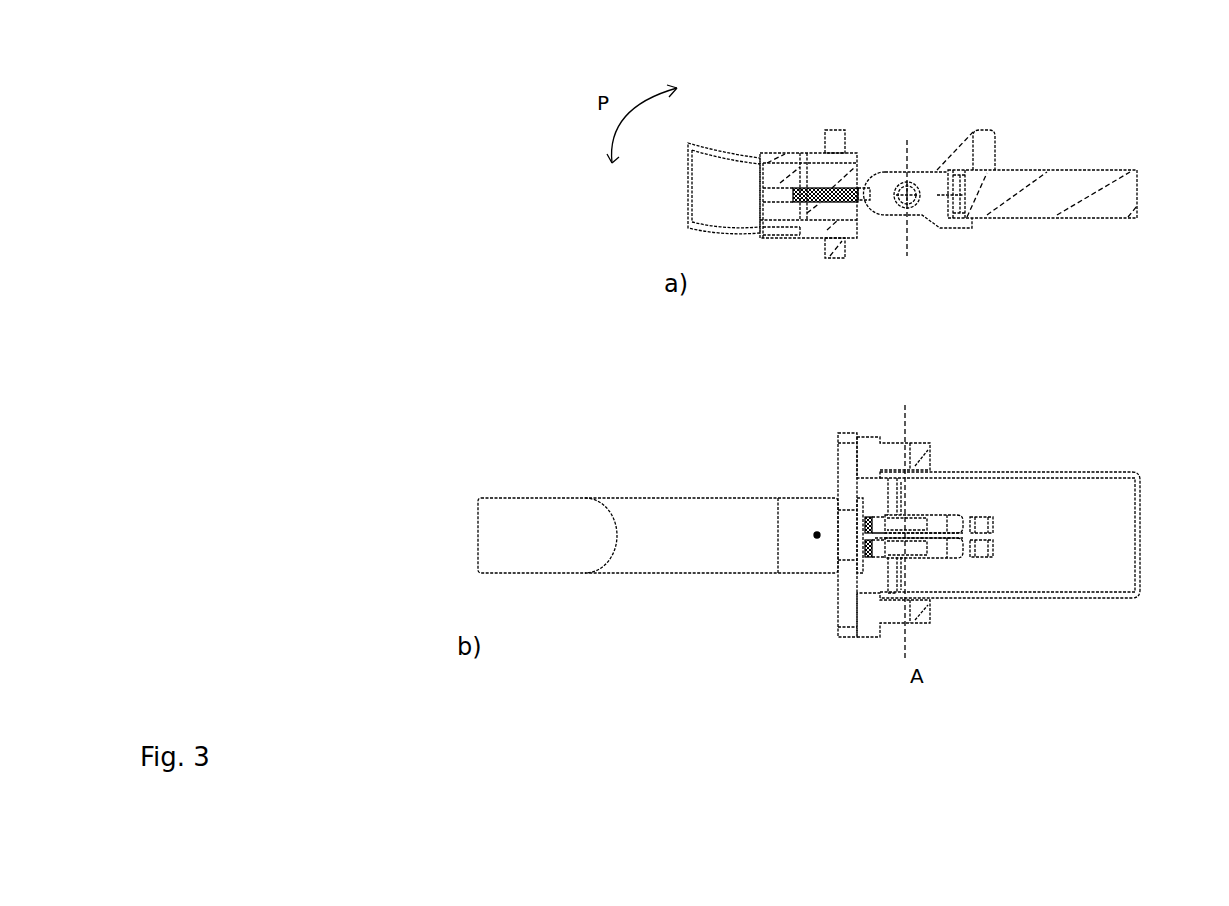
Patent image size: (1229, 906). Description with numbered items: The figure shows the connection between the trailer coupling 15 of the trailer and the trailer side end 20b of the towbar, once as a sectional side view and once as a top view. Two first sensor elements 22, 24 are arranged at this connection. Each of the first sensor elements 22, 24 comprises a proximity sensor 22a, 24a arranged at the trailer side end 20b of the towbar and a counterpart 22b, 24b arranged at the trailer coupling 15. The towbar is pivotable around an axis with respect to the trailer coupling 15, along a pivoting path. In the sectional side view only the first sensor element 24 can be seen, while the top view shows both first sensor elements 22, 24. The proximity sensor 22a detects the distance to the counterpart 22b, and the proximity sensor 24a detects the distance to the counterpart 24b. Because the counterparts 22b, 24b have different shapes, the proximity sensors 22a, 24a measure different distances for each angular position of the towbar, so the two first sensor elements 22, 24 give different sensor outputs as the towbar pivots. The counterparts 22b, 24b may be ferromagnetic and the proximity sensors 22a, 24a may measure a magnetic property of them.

In FIG. 3a, the trailer coupling 15 is at (1070, 177).
In FIG. 3b, the trailer coupling 15 is at (1103, 475).
In FIG. 3a, the trailer side end of towbar 20b is at (750, 155).
In FIG. 3b, the trailer side end of towbar 20b is at (707, 515).
In FIG. 3b, the first sensor element 22 is at (1028, 358).
In FIG. 3b, the proximity sensor 22a is at (918, 527).
In FIG. 3b, the counterpart 22b is at (933, 547).
In FIG. 3b, the first sensor element 24 is at (833, 718).
In FIG. 3a, the proximity sensor 24a is at (862, 187).
In FIG. 3b, the proximity sensor 24a is at (867, 547).
In FIG. 3a, the counterpart 24b is at (887, 178).
In FIG. 3b, the counterpart 24b is at (933, 542).